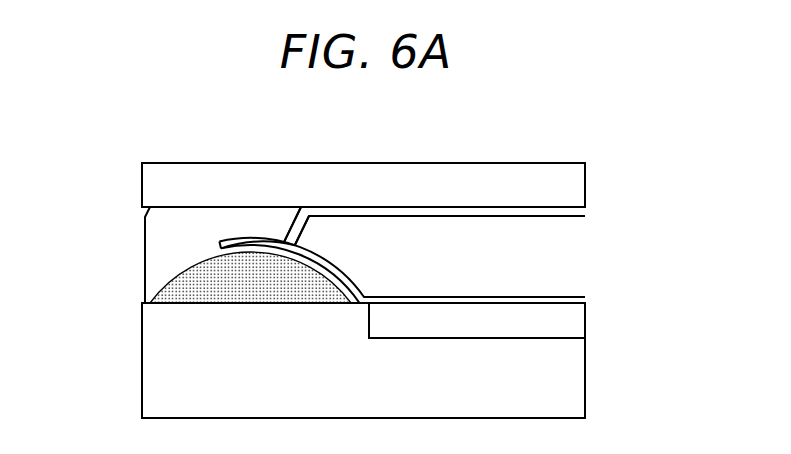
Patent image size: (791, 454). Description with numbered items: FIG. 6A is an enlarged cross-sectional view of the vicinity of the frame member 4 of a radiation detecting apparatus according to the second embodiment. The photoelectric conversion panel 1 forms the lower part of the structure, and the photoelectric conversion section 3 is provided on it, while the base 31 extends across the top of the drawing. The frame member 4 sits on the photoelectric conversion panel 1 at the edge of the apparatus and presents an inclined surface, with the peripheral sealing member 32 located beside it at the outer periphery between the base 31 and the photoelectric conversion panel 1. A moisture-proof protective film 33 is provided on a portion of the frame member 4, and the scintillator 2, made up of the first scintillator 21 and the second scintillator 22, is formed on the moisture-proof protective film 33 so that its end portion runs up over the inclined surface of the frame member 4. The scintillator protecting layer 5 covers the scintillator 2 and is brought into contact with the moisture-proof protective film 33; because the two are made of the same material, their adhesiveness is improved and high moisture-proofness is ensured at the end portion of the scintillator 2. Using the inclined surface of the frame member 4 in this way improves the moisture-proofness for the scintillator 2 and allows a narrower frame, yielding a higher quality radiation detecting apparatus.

The photoelectric conversion panel 1 is at (152, 362).
The scintillator 2 is at (456, 255).
The first scintillator 21 is at (573, 298).
The second scintillator 22 is at (577, 243).
The photoelectric conversion section 3 is at (577, 325).
The base 31 is at (463, 175).
The peripheral sealing member 32 is at (155, 235).
The moisture-proof protective film 33 is at (252, 245).
The frame member 4 is at (168, 276).
The scintillator protecting layer 5 is at (517, 212).